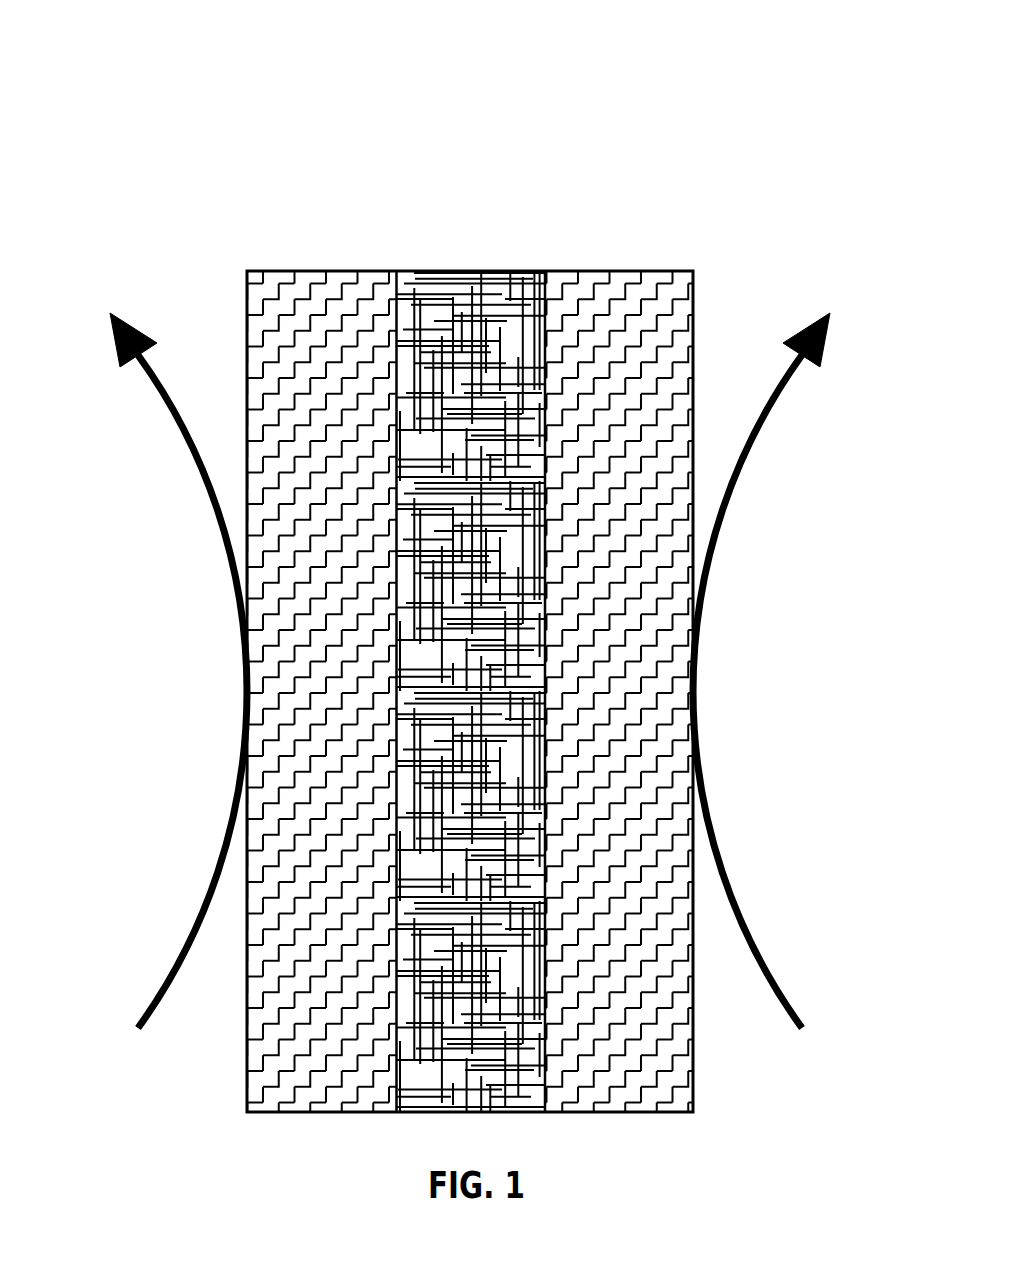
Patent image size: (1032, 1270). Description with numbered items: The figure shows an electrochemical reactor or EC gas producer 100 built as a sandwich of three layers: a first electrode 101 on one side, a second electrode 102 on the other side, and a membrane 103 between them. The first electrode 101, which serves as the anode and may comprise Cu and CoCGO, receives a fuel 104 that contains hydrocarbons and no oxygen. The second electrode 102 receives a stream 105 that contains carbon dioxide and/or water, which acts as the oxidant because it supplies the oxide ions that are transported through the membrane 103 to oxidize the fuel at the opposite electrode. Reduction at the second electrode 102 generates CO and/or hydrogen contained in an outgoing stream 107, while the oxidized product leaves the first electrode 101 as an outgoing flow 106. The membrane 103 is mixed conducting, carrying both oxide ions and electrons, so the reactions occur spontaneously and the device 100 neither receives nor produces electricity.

The electrochemical gas producer 100 is at (713, 173).
The first electrode 101 is at (308, 310).
The second electrode 102 is at (625, 308).
The membrane 103 is at (462, 307).
The fuel 104 is at (153, 717).
The stream 105 is at (786, 722).
The first outlet flow 106 is at (100, 309).
The stream 107 is at (844, 317).